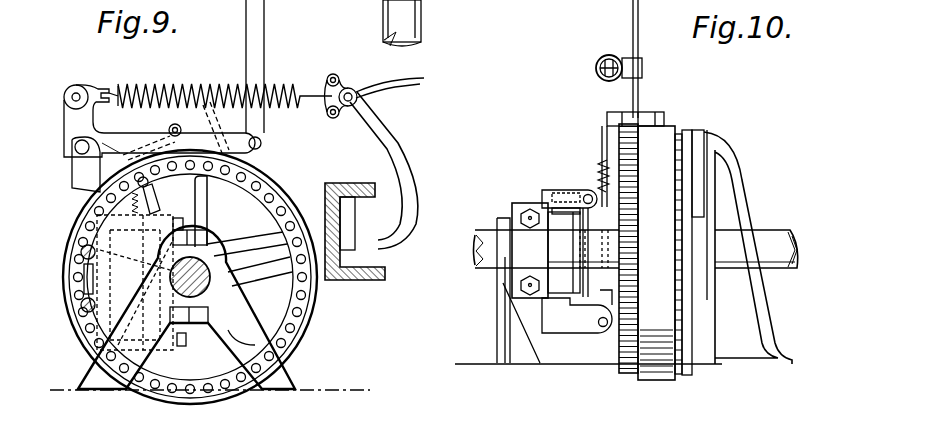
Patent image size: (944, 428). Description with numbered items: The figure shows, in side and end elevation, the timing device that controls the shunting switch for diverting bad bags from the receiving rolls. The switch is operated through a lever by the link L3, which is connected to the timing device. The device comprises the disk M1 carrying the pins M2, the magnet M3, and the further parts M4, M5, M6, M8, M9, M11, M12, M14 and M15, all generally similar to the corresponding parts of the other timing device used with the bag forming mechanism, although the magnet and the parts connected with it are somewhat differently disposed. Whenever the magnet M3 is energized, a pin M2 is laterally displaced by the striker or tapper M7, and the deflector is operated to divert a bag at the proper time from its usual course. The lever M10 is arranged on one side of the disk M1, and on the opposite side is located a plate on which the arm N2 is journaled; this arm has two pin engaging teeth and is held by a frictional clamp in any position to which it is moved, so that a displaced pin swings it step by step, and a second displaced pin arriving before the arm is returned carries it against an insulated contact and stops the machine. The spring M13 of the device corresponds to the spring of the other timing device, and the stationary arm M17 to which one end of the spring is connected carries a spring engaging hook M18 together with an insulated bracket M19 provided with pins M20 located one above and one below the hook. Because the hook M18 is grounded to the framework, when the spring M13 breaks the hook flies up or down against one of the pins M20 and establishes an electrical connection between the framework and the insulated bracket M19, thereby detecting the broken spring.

In FIG. 9, the disk M1 is at (283, 200).
In FIG. 10, the disk M1 is at (662, 380).
In FIG. 9, the pin M2 is at (282, 212).
In FIG. 10, the pin M2 is at (630, 373).
In FIG. 10, the magnet M3 is at (560, 222).
In FIG. 10, the timing mechanism part M4 is at (555, 200).
In FIG. 10, the timing mechanism part M5 is at (588, 320).
In FIG. 10, the timing mechanism part M6 is at (600, 150).
In FIG. 9, the striker M7 is at (205, 208).
In FIG. 9, the timing mechanism part M8 is at (222, 272).
In FIG. 10, the timing mechanism part M9 is at (598, 173).
In FIG. 9, the lever M10 is at (130, 142).
In FIG. 9, the timing mechanism part M11 is at (74, 162).
In FIG. 9, the timing mechanism part M12 is at (72, 122).
In FIG. 9, the spring M13 is at (182, 82).
In FIG. 10, the spring M13 is at (595, 68).
In FIG. 9, the timing mechanism part M14 is at (97, 226).
In FIG. 10, the timing mechanism part M14 is at (606, 140).
In FIG. 10, the timing mechanism part M15 is at (688, 192).
In FIG. 9, the stationary arm M17 is at (388, 134).
In FIG. 9, the spring engaging hook M18 is at (328, 92).
In FIG. 9, the insulated bracket M19 is at (362, 88).
In FIG. 9, the pins M20 is at (340, 76).
In FIG. 9, the arm N2 is at (192, 136).
In FIG. 9, the link L3 is at (265, 28).
In FIG. 10, the link L3 is at (640, 24).